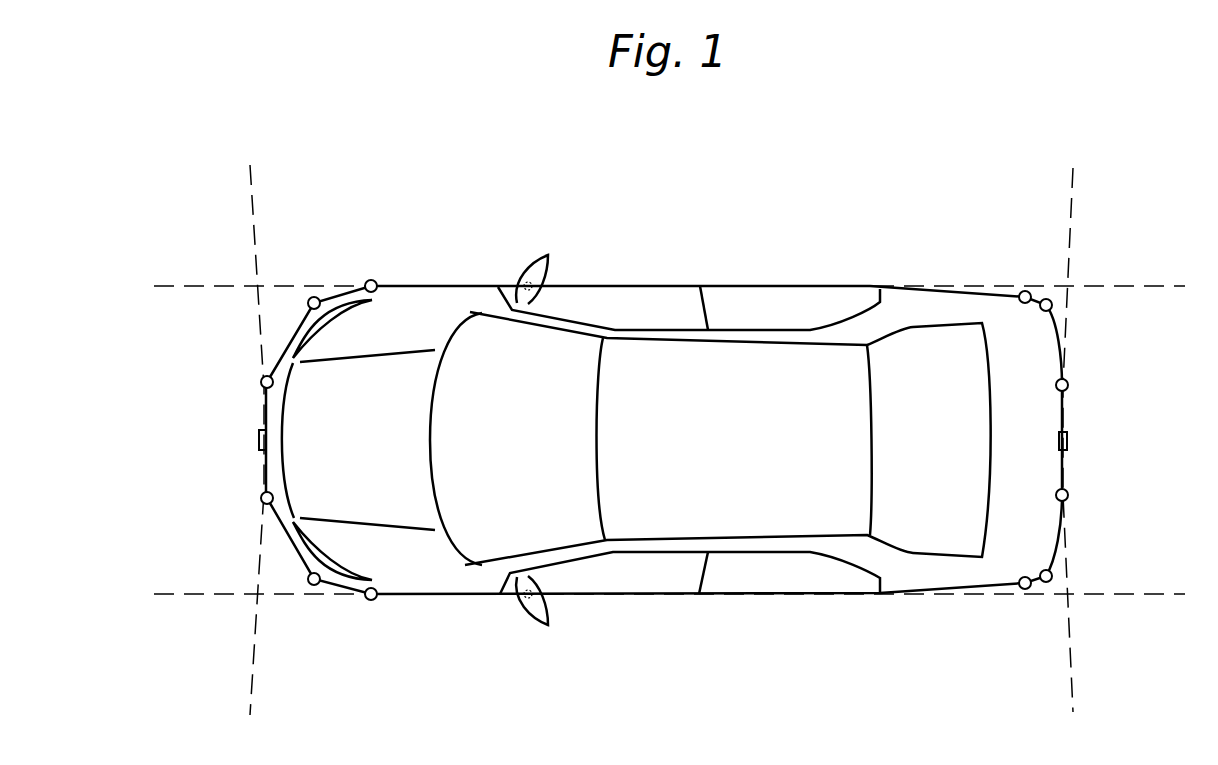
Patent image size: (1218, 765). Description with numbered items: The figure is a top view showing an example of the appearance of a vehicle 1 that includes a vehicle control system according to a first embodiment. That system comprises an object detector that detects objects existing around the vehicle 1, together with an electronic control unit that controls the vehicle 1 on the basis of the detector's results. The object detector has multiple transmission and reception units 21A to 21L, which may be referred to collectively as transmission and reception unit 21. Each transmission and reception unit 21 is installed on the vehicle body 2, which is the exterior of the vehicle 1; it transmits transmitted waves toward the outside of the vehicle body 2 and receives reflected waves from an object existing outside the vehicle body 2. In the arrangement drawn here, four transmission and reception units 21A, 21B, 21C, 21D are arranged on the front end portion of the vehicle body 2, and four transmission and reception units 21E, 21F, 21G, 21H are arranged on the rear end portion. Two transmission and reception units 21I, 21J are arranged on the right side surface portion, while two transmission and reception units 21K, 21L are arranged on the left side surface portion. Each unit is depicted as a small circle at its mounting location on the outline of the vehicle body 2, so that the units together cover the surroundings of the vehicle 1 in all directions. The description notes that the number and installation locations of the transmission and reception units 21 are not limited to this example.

The vehicle 1 is at (807, 183).
The vehicle body 2 is at (1001, 283).
The transmission and reception unit 21 is at (670, 425).
The transmission and reception unit 21A is at (308, 303).
The transmission and reception unit 21B is at (261, 382).
The transmission and reception unit 21C is at (261, 497).
The transmission and reception unit 21D is at (308, 579).
The transmission and reception unit 21E is at (1051, 301).
The transmission and reception unit 21F is at (1127, 363).
The transmission and reception unit 21G is at (1069, 495).
The transmission and reception unit 21H is at (1053, 573).
The transmission and reception unit 21I is at (368, 281).
The transmission and reception unit 21J is at (1030, 291).
The transmission and reception unit 21K is at (368, 600).
The transmission and reception unit 21L is at (1024, 590).